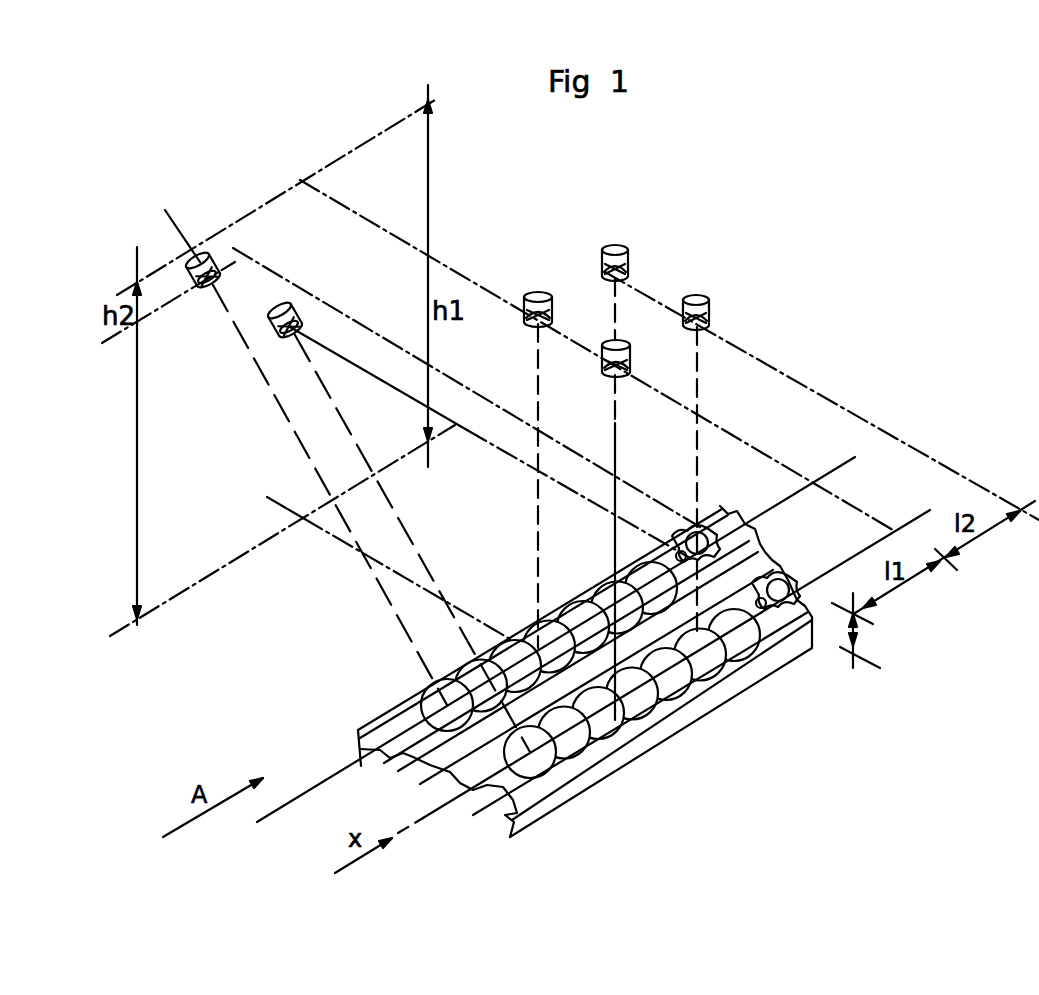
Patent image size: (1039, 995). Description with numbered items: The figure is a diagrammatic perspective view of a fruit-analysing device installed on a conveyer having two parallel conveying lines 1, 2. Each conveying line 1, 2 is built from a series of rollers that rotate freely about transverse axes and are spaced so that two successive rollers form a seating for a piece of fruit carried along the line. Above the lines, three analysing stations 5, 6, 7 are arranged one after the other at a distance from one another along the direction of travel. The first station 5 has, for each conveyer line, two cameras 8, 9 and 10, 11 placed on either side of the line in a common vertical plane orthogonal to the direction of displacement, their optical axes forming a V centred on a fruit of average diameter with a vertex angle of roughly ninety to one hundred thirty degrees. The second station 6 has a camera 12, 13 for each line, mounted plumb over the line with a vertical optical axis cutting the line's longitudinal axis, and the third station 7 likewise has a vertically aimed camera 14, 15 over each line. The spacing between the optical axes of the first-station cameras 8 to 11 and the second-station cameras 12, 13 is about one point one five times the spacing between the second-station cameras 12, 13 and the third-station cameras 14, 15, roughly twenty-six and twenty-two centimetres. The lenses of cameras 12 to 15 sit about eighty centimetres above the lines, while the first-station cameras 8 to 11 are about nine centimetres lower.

The conveying line 1 is at (390, 766).
The conveying line 2 is at (497, 813).
The first analysing station 5 is at (172, 242).
The second analysing station 6 is at (308, 167).
The third analysing station 7 is at (585, 237).
The camera 8 is at (203, 258).
The camera 9 is at (698, 533).
The camera 10 is at (283, 308).
The camera 11 is at (782, 580).
The camera 12 is at (537, 295).
The camera 13 is at (620, 342).
The camera 14 is at (617, 248).
The camera 15 is at (698, 294).